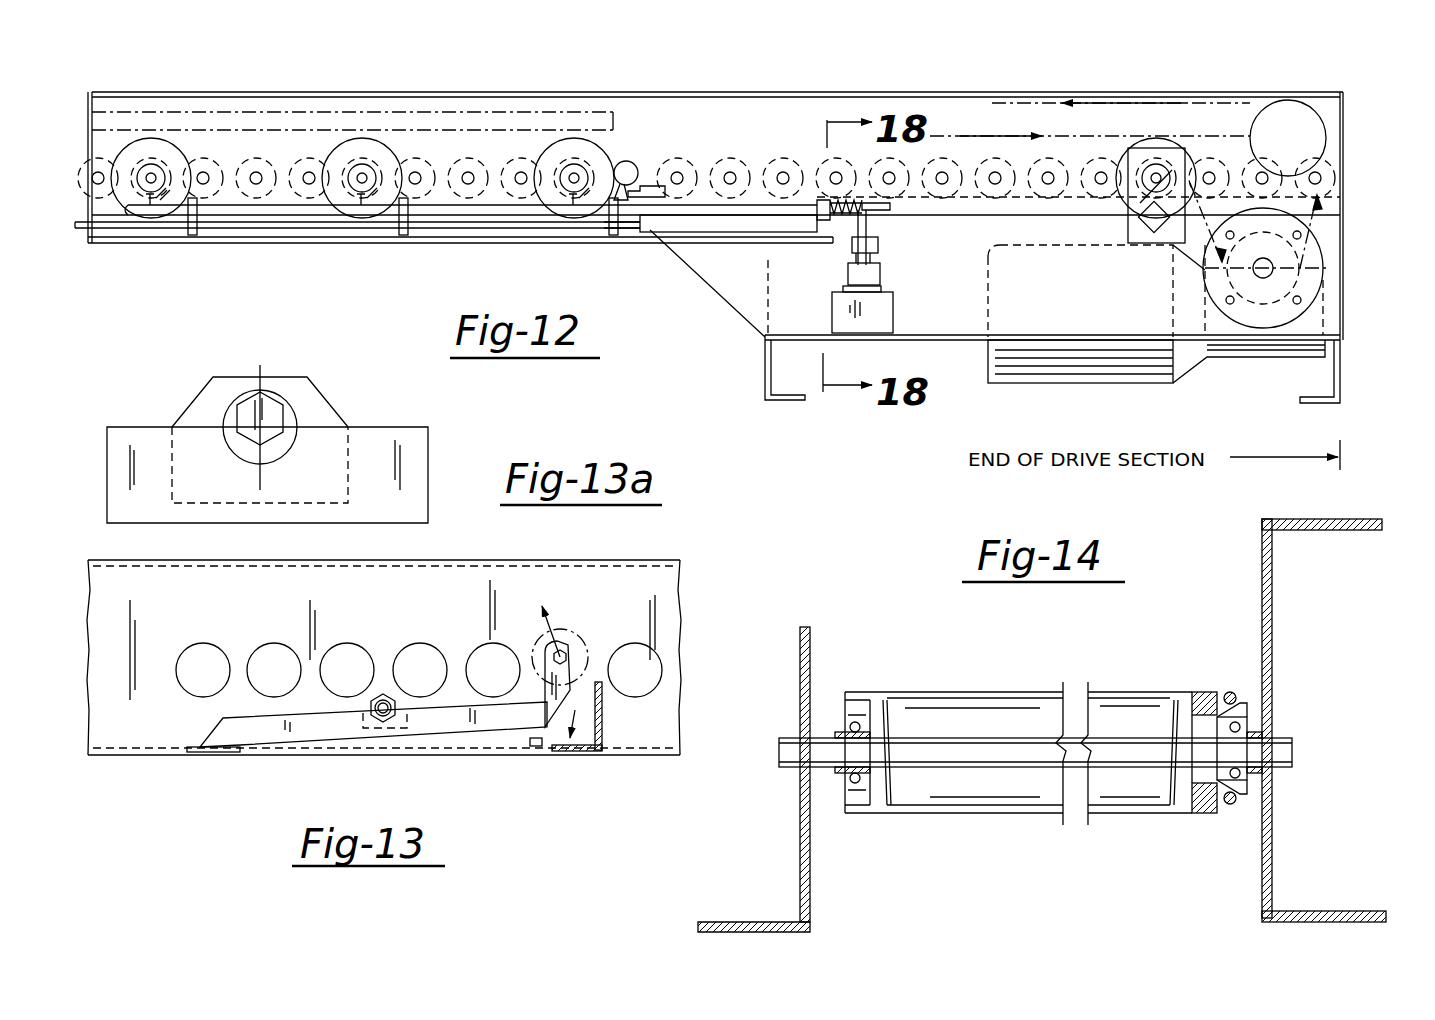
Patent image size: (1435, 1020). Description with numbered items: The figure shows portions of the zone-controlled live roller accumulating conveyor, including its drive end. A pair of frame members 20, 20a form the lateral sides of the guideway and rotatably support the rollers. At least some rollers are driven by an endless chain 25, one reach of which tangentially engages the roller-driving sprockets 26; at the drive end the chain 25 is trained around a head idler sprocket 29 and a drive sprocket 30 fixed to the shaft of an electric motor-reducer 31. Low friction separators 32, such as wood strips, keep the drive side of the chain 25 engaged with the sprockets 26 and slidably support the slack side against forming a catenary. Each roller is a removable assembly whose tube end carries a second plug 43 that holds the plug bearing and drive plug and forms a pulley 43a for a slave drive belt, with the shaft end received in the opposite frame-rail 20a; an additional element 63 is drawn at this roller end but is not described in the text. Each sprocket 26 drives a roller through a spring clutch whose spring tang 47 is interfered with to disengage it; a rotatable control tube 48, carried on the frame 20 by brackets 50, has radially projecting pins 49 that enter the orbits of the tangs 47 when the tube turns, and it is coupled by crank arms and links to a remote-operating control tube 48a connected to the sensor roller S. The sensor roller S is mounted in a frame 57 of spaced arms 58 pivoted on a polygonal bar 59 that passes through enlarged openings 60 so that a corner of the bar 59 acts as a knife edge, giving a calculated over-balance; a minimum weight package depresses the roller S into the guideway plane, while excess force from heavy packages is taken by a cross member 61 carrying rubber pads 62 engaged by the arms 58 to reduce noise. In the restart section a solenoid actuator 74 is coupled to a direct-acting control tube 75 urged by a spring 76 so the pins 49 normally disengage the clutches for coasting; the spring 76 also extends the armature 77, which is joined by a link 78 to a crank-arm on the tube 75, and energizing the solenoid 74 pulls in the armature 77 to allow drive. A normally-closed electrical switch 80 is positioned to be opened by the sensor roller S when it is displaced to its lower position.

In FIG. 12, the frame member 20 is at (921, 90).
In FIG. 13, the frame member 20 is at (384, 657).
In FIG. 14, the frame member 20 is at (1262, 572).
In FIG. 14, the opposite side frame-rail 20a is at (810, 672).
In FIG. 12, the endless chain 25 is at (1085, 135).
In FIG. 12, the roller-driving sprocket 26 is at (96, 190).
In FIG. 12, the head idler sprocket 29 is at (1298, 120).
In FIG. 12, the drive sprocket 30 is at (1280, 260).
In FIG. 12, the electric motor-reducer 31 is at (1315, 318).
In FIG. 12, the low friction separator 32 is at (372, 78).
In FIG. 14, the second plug 43 is at (1200, 693).
In FIG. 14, the pulley 43a is at (1228, 700).
In FIG. 12, the spring tang 47 is at (160, 210).
In FIG. 12, the rotatable control tube 48 is at (298, 208).
In FIG. 12, the remote-operating control tube 48a is at (352, 236).
In FIG. 12, the radially projecting pin 49 is at (138, 207).
In FIG. 12, the bracket 50 is at (190, 228).
In FIG. 13, the frame 57 is at (200, 760).
In FIG. 13A, the spaced arm 58 is at (395, 478).
In FIG. 13, the spaced arm 58 is at (283, 727).
In FIG. 13A, the bar 59 is at (270, 410).
In FIG. 13, the bar 59 is at (386, 700).
In FIG. 13A, the enlarged opening 60 is at (298, 445).
In FIG. 13, the enlarged opening 60 is at (385, 728).
In FIG. 13, the cross member 61 is at (570, 752).
In FIG. 13, the rubber pad 62 is at (527, 736).
In FIG. 14, the set screw 63 is at (1230, 805).
In FIG. 12, the solenoid actuator 74 is at (893, 312).
In FIG. 12, the direct-acting control tube 75 is at (712, 214).
In FIG. 12, the spring 76 is at (854, 218).
In FIG. 12, the armature 77 is at (882, 266).
In FIG. 12, the link 78 is at (870, 228).
In FIG. 12, the normally-closed electrical switch 80 is at (663, 185).
In FIG. 12, the sensor roller S is at (630, 163).
In FIG. 13, the sensor roller S is at (568, 640).